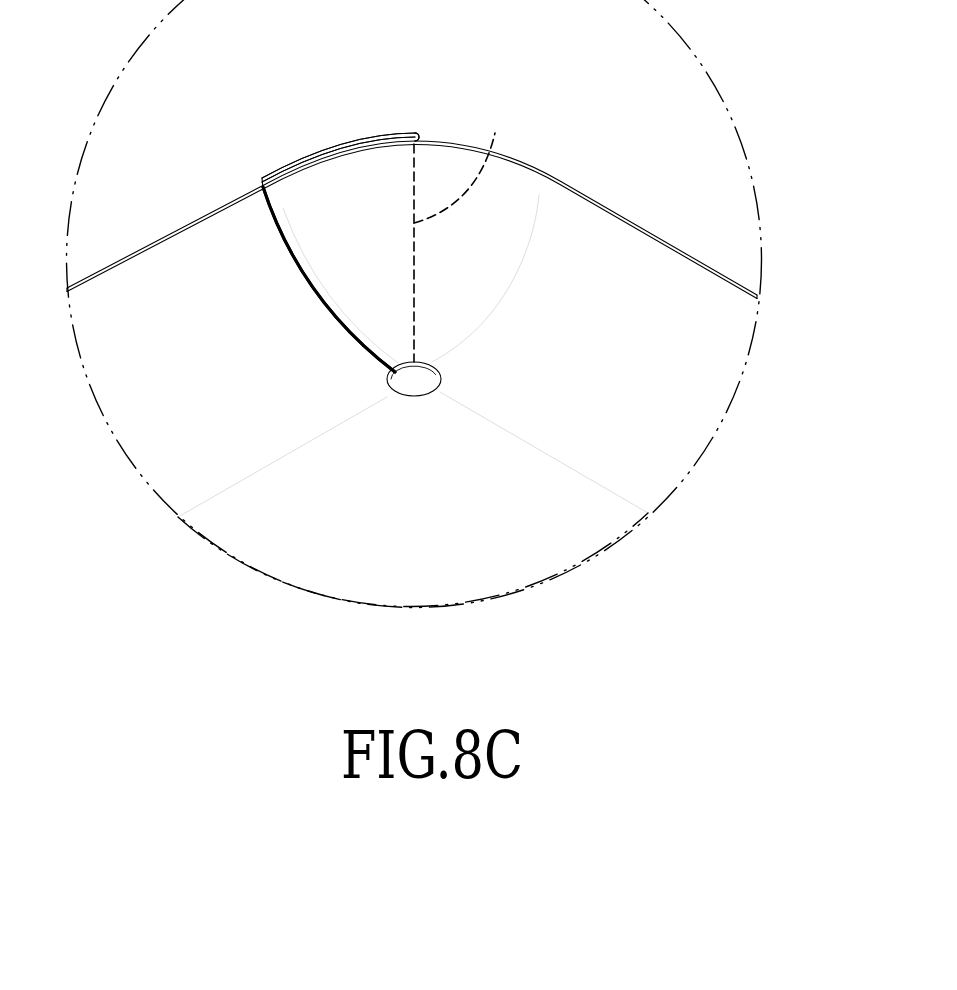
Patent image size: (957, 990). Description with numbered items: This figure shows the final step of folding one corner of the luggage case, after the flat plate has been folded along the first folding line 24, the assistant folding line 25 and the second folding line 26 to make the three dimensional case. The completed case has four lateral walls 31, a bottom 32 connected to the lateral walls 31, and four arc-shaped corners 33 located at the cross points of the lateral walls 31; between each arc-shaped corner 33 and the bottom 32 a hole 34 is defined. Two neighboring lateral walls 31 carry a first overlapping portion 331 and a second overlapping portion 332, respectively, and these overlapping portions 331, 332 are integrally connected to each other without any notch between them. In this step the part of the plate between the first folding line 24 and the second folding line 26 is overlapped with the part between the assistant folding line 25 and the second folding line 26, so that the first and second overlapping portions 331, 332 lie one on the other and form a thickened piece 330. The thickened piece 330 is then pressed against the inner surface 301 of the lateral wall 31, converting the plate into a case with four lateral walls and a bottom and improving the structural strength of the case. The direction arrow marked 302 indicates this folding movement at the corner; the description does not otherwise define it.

The first folding line 24 is at (420, 136).
The assistant folding line 25 is at (461, 164).
The second folding line 26 is at (277, 220).
The lateral wall 31 is at (182, 270).
The bottom 32 is at (502, 550).
The arc-shaped corner 33 is at (408, 108).
The thickened piece 330 is at (304, 281).
The first overlapping portion 331 is at (345, 145).
The second overlapping portion 332 is at (366, 146).
The hole 34 is at (417, 383).
The inner surface 301 is at (653, 428).
The second rotation direction 302 is at (703, 262).